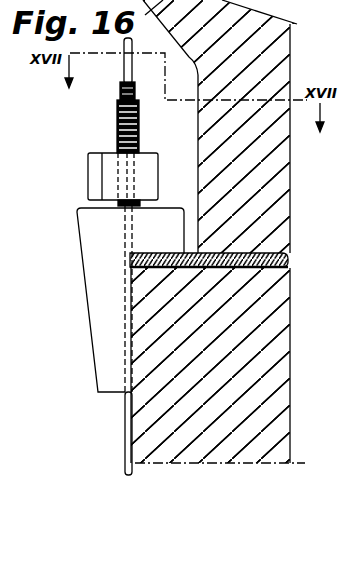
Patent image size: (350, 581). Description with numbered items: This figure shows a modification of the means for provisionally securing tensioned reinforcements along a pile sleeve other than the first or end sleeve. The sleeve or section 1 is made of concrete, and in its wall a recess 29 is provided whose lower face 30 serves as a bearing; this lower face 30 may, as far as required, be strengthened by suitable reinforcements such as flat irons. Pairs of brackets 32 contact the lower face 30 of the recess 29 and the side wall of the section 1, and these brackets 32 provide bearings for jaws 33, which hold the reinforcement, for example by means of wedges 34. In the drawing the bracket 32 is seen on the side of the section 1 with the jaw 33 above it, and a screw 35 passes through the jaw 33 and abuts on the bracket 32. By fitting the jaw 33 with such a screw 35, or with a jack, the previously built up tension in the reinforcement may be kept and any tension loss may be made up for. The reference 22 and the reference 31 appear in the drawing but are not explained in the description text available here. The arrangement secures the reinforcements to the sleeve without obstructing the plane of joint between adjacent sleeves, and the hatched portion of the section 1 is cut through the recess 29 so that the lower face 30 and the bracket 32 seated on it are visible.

The sleeve section 1 is at (194, 235).
The upper member 22 is at (303, 3).
The recess 29 is at (205, 150).
The lower face 30 is at (207, 271).
The plate 31 is at (265, 258).
The bracket 32 is at (98, 255).
The jaw 33 is at (95, 170).
The wedge 34 is at (341, 177).
The screw 35 is at (117, 114).